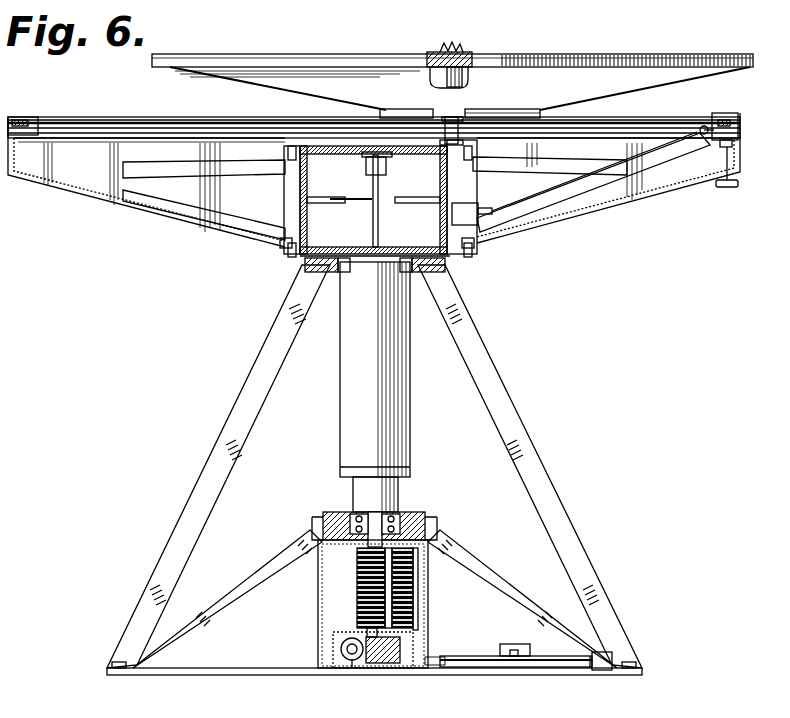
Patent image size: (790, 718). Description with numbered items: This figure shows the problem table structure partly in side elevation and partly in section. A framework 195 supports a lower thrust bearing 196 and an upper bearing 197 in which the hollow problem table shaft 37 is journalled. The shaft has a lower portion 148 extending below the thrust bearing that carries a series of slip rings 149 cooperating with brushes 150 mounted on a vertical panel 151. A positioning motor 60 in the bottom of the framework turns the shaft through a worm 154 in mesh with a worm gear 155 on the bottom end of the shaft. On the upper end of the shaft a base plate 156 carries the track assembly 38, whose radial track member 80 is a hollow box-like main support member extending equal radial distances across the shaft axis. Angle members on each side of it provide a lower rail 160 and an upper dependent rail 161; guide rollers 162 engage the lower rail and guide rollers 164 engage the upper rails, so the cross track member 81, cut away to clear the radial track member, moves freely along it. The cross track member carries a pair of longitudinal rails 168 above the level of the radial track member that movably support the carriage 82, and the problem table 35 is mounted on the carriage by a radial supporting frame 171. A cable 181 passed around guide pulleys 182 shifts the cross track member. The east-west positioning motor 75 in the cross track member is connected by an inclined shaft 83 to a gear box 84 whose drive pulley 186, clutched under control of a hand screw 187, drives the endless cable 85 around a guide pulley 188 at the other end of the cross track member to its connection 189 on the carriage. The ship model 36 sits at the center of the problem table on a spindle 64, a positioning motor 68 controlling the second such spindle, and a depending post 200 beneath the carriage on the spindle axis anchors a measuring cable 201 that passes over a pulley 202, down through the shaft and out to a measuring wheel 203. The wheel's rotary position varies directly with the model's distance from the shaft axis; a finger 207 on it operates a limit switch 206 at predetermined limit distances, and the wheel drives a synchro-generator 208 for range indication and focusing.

The problem table 35 is at (628, 55).
The ship model 36 is at (456, 50).
The problem table shaft 37 is at (340, 436).
The track assembly 38 is at (584, 216).
The positioning motor 60 is at (352, 668).
The spindle 64 is at (437, 54).
The positioning motor 68 is at (444, 78).
The east-west positioning motor 75 is at (482, 210).
The radial track member 80 is at (310, 222).
The cross track member 81 is at (80, 194).
The carriage 82 is at (504, 116).
The inclined shaft 83 is at (634, 165).
The gear box 84 is at (724, 118).
The endless cable 85 is at (638, 126).
The lower portion of shaft 148 is at (360, 546).
The slip rings 149 is at (357, 594).
The brushes 150 is at (400, 596).
The vertical panel 151 is at (418, 612).
The worm 154 is at (342, 650).
The worm gear 155 is at (393, 666).
The base plate 156 is at (302, 262).
The lower rail 160 is at (286, 230).
The upper dependent rail 161 is at (288, 172).
The guide rollers 162 is at (284, 248).
The guide rollers 164 is at (285, 153).
The longitudinal rails 168 is at (100, 120).
The radial supporting frame 171 is at (668, 84).
The cable 181 is at (352, 193).
The guide pulleys 182 is at (316, 197).
The drive pulley 186 is at (738, 133).
The hand screw 187 is at (724, 188).
The guide pulley 188 is at (42, 120).
The cable connection to carriage 189 is at (458, 124).
The legs 195 is at (532, 434).
The bearing block 196 is at (412, 514).
The collar 197 is at (424, 270).
The depending post 200 is at (448, 104).
The measuring cable 201 is at (382, 196).
The pulley 202 is at (375, 124).
The measuring wheel 203 is at (470, 656).
The limit switch 206 is at (606, 670).
The finger 207 is at (590, 668).
The synchro-generator 208 is at (517, 644).